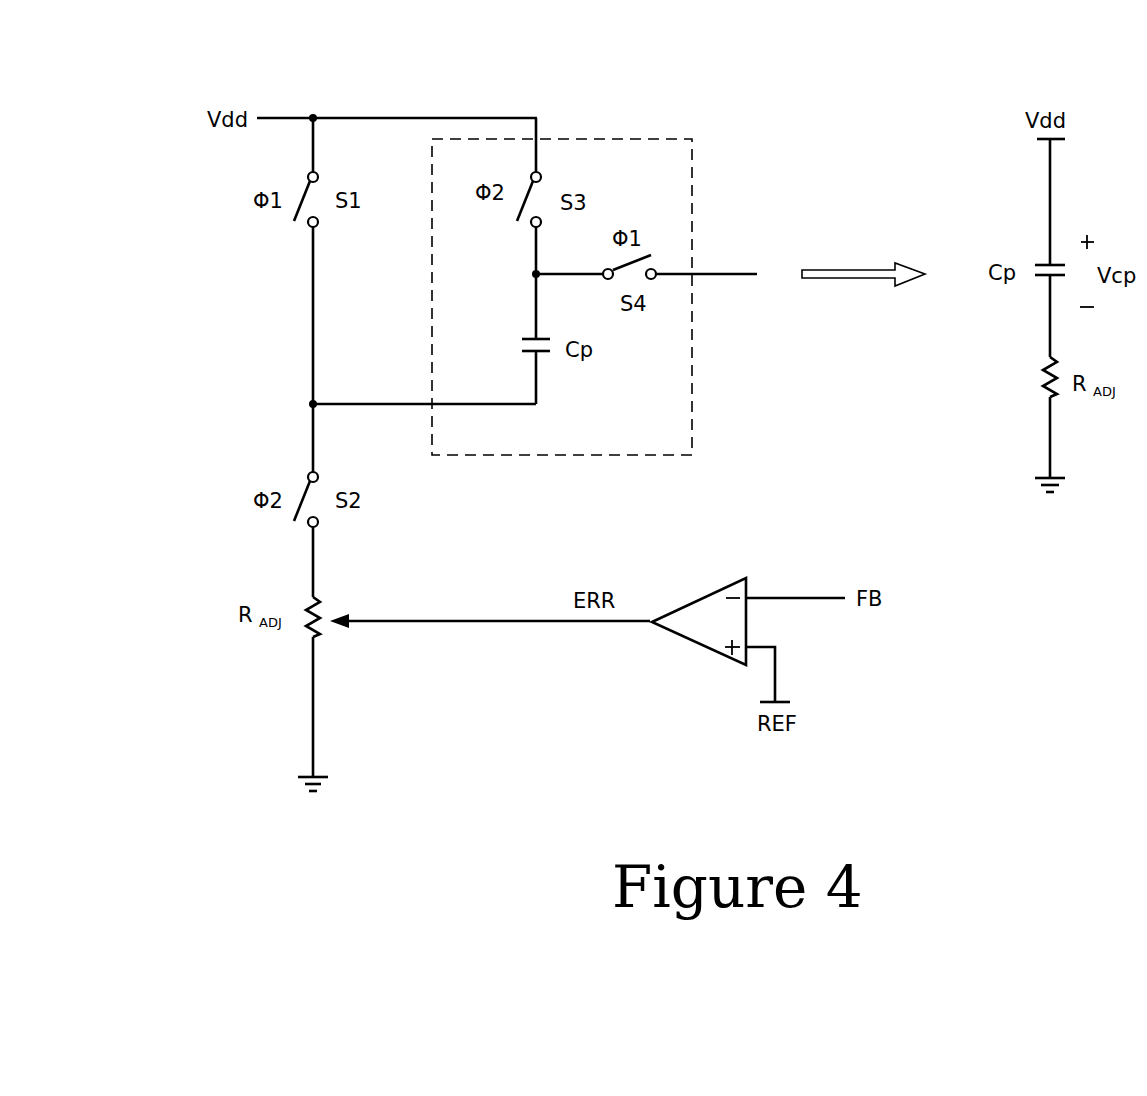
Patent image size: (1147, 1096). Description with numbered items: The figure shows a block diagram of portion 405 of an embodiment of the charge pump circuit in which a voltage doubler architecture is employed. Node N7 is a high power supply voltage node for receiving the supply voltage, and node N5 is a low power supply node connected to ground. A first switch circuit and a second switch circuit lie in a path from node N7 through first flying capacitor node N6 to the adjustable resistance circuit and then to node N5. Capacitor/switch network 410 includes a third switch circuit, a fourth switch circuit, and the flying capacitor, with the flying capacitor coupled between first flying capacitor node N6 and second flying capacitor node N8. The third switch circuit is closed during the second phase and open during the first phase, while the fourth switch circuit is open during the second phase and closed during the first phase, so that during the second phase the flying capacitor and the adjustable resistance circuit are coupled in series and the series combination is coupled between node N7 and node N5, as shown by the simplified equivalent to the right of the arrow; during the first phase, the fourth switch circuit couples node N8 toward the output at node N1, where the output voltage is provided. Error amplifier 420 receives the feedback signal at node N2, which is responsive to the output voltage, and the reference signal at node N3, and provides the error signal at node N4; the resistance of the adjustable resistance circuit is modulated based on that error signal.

The portion 405 is at (722, 35).
The capacitor/switch network 410 is at (556, 456).
The error amplifier 420 is at (699, 598).
The node N1 is at (707, 276).
The node N2 is at (822, 598).
The node N3 is at (775, 670).
The node N4 is at (468, 620).
The low power supply node N5 is at (313, 713).
The first flying capacitor node N6 is at (311, 405).
The high power supply voltage node N7 is at (315, 117).
The second flying capacitor node N8 is at (534, 275).